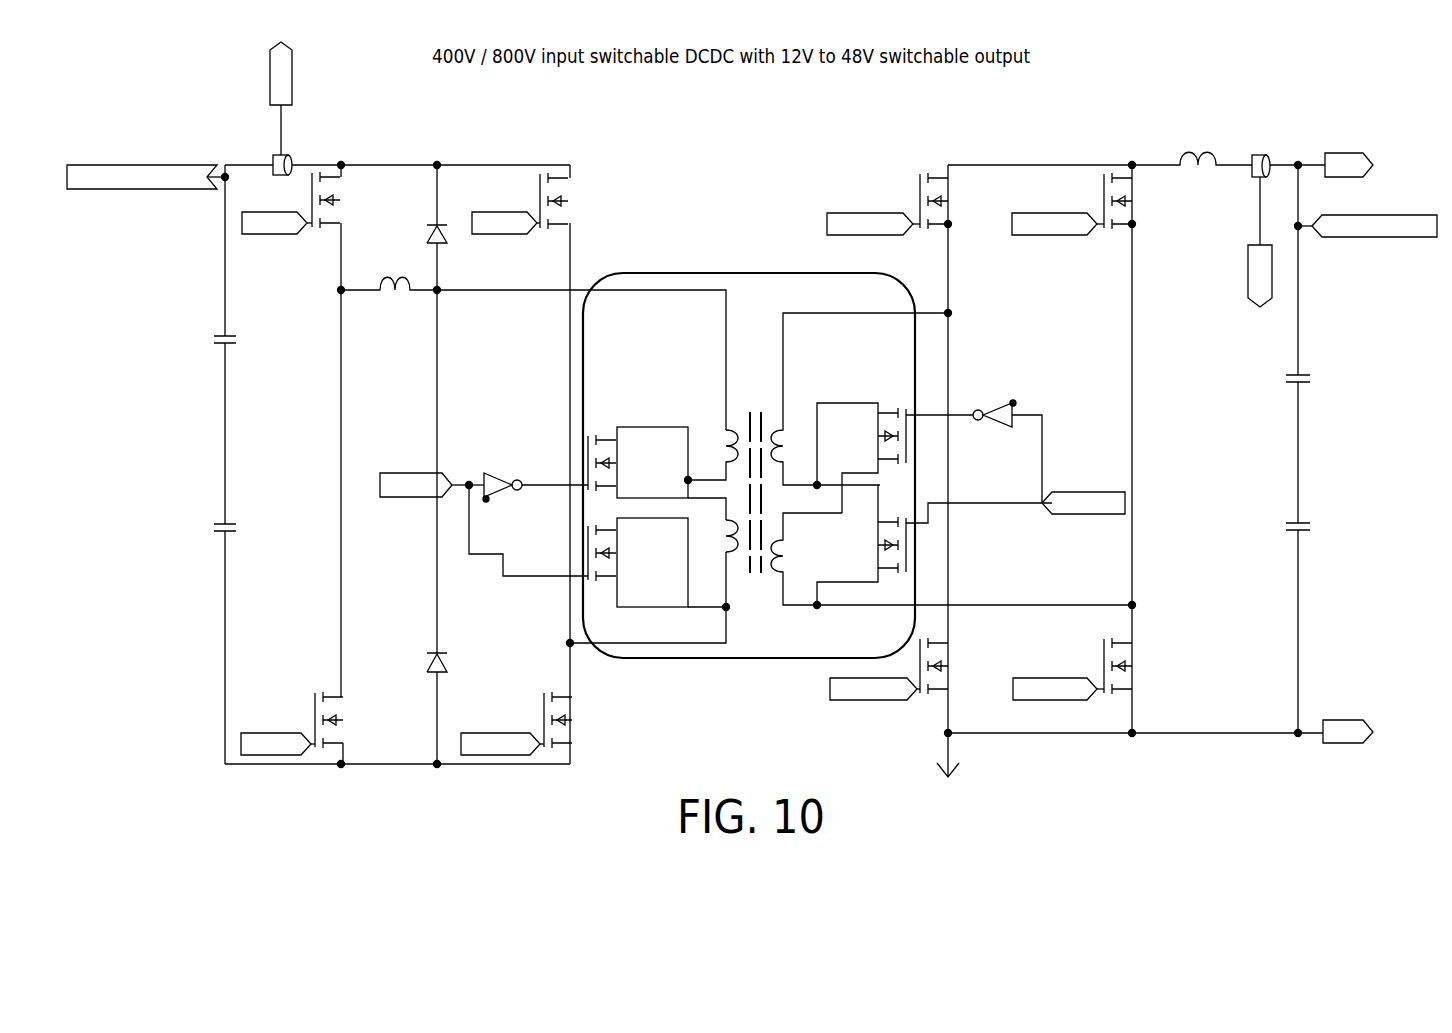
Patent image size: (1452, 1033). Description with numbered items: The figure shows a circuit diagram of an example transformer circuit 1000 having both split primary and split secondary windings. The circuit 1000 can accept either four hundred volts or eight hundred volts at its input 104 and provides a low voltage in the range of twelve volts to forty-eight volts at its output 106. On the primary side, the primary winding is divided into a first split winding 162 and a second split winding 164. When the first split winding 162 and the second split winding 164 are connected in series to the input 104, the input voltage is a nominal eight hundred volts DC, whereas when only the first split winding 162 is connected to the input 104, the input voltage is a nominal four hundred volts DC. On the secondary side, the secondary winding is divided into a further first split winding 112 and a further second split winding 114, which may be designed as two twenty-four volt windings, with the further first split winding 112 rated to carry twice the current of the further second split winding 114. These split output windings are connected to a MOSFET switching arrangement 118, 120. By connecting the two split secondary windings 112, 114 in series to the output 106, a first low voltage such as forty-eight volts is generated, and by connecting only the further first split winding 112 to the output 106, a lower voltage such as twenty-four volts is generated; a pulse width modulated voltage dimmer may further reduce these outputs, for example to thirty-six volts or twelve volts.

The transformer circuit 1000 is at (1102, 124).
The input 104 is at (578, 138).
The output 106 is at (993, 140).
The further first split winding 112 is at (780, 428).
The further second split winding 114 is at (788, 572).
The MOSFET switching arrangement 118 is at (907, 448).
The MOSFET switching arrangement 120 is at (907, 548).
The first split winding 162 is at (727, 443).
The second split winding 164 is at (727, 553).